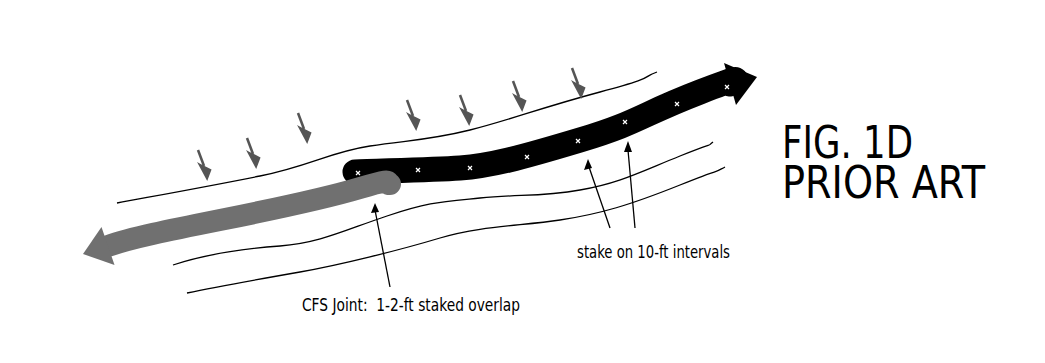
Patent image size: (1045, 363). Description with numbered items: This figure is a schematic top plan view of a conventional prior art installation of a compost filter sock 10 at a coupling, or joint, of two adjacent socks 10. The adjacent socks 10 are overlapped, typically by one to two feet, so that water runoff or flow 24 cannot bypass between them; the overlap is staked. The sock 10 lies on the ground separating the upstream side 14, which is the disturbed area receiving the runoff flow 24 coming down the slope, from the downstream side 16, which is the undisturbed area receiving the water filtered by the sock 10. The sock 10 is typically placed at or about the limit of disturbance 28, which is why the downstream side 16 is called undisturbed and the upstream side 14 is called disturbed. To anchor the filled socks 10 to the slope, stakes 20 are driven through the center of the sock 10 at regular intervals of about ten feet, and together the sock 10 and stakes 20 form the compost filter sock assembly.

The compost filter sock 10 is at (442, 197).
The upstream side 14 is at (622, 86).
The downstream side 16 is at (535, 227).
The stakes 20 is at (350, 162).
The flow 24 is at (308, 125).
The limit of disturbance 28 is at (176, 267).